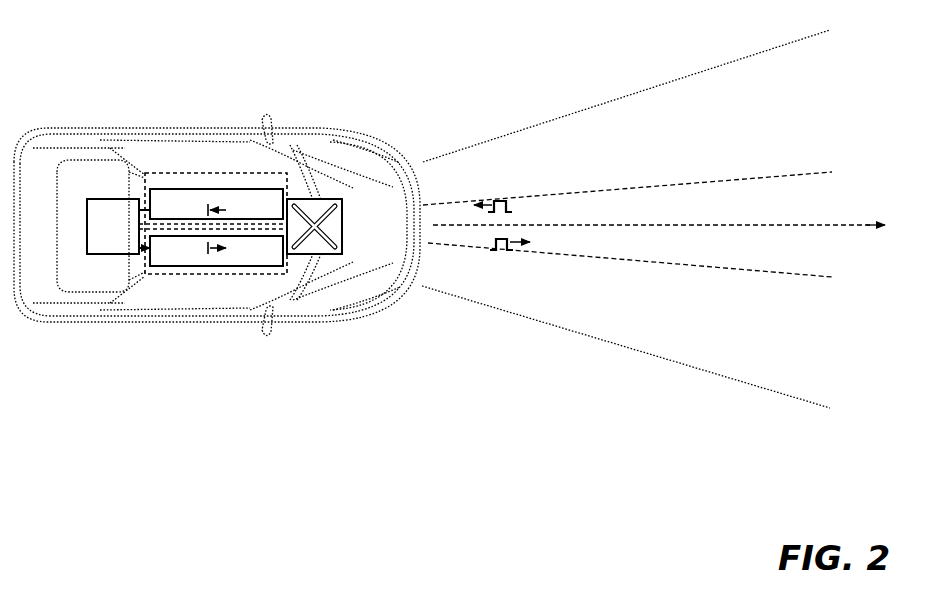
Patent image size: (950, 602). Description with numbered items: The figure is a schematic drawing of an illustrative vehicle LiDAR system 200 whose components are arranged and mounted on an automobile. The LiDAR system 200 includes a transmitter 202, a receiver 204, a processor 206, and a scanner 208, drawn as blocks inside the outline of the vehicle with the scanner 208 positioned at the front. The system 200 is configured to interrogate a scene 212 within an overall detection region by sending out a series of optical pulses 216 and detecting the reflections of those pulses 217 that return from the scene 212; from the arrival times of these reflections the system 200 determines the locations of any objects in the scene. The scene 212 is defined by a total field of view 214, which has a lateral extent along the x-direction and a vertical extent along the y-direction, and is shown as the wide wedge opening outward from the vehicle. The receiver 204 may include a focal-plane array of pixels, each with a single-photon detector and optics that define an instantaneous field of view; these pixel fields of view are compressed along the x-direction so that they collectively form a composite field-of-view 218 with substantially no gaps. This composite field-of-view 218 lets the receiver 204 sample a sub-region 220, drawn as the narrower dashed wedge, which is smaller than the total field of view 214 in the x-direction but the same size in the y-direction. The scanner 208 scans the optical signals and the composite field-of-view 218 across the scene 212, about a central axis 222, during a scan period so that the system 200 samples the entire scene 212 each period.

The LiDAR system 200 is at (39, 77).
The transmitter 202 is at (216, 256).
The receiver 204 is at (216, 198).
The processor 206 is at (113, 226).
The scanner 208 is at (358, 226).
The scene 212 is at (623, 127).
The total field of view (TFOV) 214 is at (638, 347).
The optical pulses 216 is at (490, 250).
The reflections of the pulses 217 is at (503, 196).
The composite field-of-view (CFOV) 218 is at (727, 267).
The sub-region 220 is at (798, 258).
The axis 222 is at (847, 223).